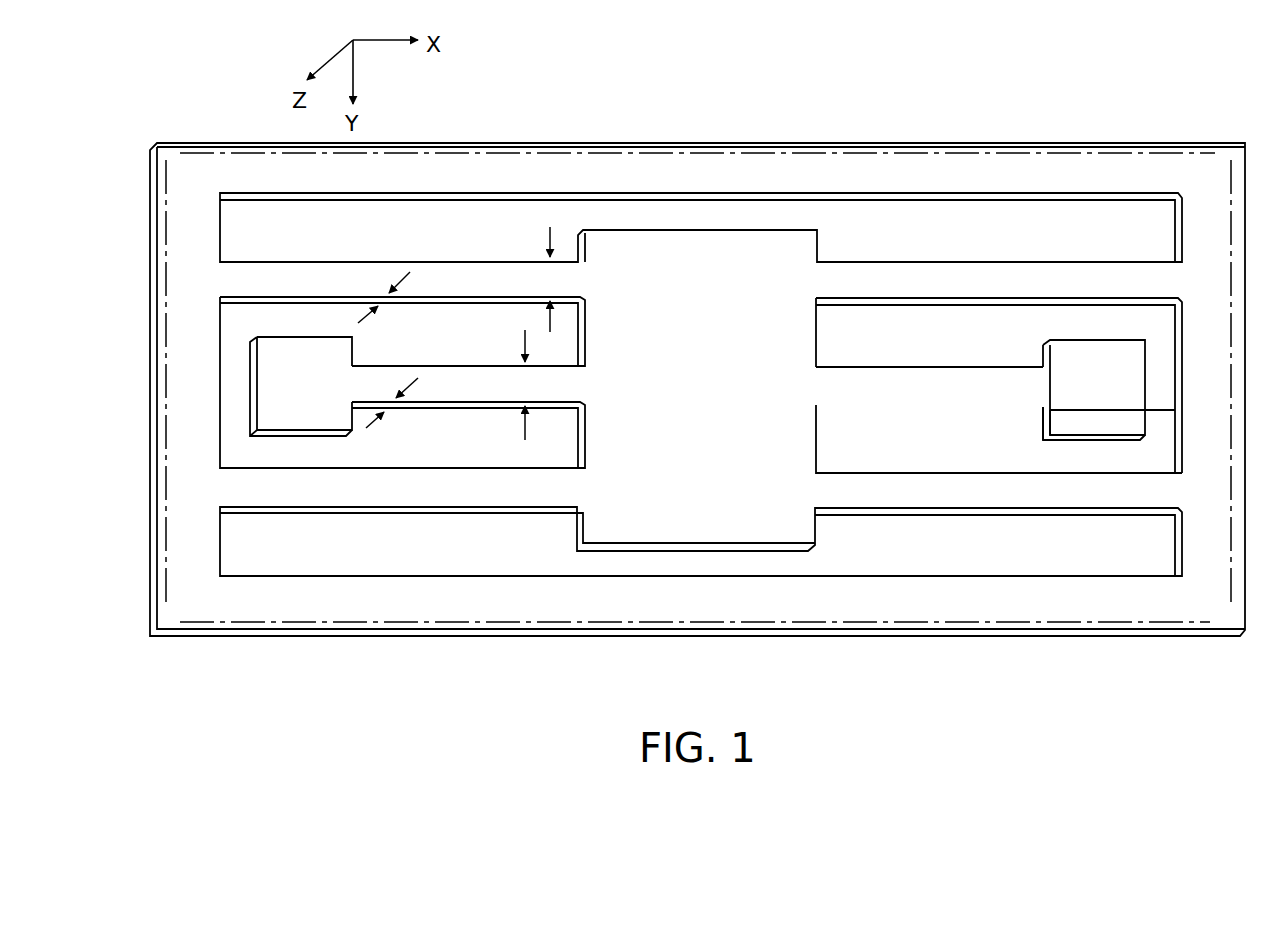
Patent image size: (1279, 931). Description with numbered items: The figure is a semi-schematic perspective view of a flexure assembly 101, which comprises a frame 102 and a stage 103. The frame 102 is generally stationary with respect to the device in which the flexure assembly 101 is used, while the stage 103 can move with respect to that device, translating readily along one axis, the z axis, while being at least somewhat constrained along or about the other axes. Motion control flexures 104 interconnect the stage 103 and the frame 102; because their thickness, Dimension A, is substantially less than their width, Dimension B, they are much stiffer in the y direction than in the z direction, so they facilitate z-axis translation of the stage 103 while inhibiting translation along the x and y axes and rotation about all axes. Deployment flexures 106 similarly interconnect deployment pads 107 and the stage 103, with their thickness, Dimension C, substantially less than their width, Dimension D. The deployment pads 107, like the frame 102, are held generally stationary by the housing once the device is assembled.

The flexure assembly 101 is at (899, 106).
The frame 102 is at (933, 639).
The stage 103 is at (818, 340).
The motion control flexures 104 is at (473, 261).
The deployment flexures 106 is at (473, 366).
The deployment pads 107 is at (268, 436).